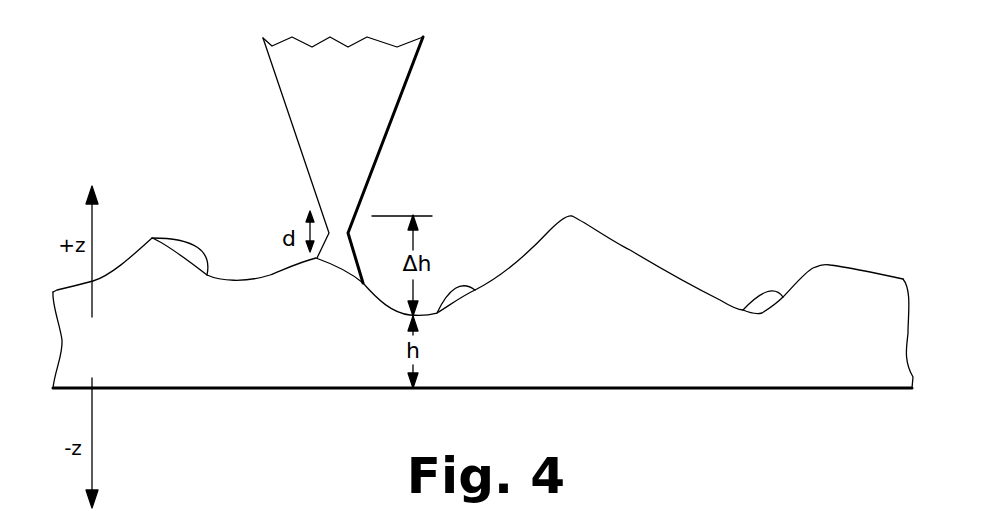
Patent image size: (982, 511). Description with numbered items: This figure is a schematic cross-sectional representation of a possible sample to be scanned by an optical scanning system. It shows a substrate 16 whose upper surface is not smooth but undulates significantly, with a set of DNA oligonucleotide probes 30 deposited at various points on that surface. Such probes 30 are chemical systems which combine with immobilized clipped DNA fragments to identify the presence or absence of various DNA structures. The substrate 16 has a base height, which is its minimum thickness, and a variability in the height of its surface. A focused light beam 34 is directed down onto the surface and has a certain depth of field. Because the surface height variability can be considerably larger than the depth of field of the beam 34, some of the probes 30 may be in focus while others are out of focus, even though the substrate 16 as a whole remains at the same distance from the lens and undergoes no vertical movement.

The substrate 16 is at (858, 288).
The DNA oligonucleotide probes 30 is at (183, 252).
The focused light beam 34 is at (308, 142).